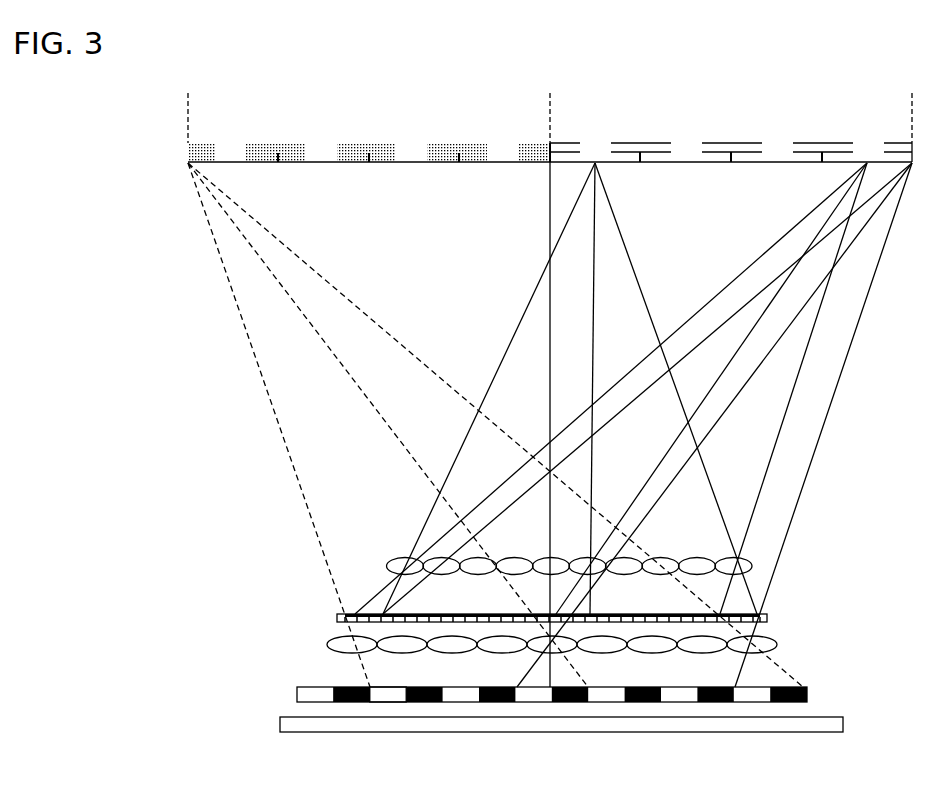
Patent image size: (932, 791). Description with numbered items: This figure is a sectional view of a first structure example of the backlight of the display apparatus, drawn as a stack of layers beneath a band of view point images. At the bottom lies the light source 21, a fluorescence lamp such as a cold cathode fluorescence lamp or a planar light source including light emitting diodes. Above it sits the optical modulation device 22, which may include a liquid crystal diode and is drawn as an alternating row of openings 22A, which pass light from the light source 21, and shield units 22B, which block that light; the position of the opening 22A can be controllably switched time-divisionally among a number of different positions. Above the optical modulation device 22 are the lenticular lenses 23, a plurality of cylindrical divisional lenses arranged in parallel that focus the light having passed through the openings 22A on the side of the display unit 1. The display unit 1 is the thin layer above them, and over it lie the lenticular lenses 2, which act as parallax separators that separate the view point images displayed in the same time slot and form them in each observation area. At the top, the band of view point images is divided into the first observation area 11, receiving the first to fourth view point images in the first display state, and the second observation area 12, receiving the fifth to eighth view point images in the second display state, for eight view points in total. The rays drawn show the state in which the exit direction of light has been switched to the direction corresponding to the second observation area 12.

The first observation area 11 is at (547, 109).
The second observation area 12 is at (909, 109).
The display unit 1 is at (780, 611).
The lenticular lenses 2 is at (762, 560).
The lenticular lenses 23 is at (792, 636).
The optical modulation device 22 is at (815, 695).
The opening 22A is at (383, 690).
The shield unit 22B is at (343, 688).
The light source 21 is at (840, 722).